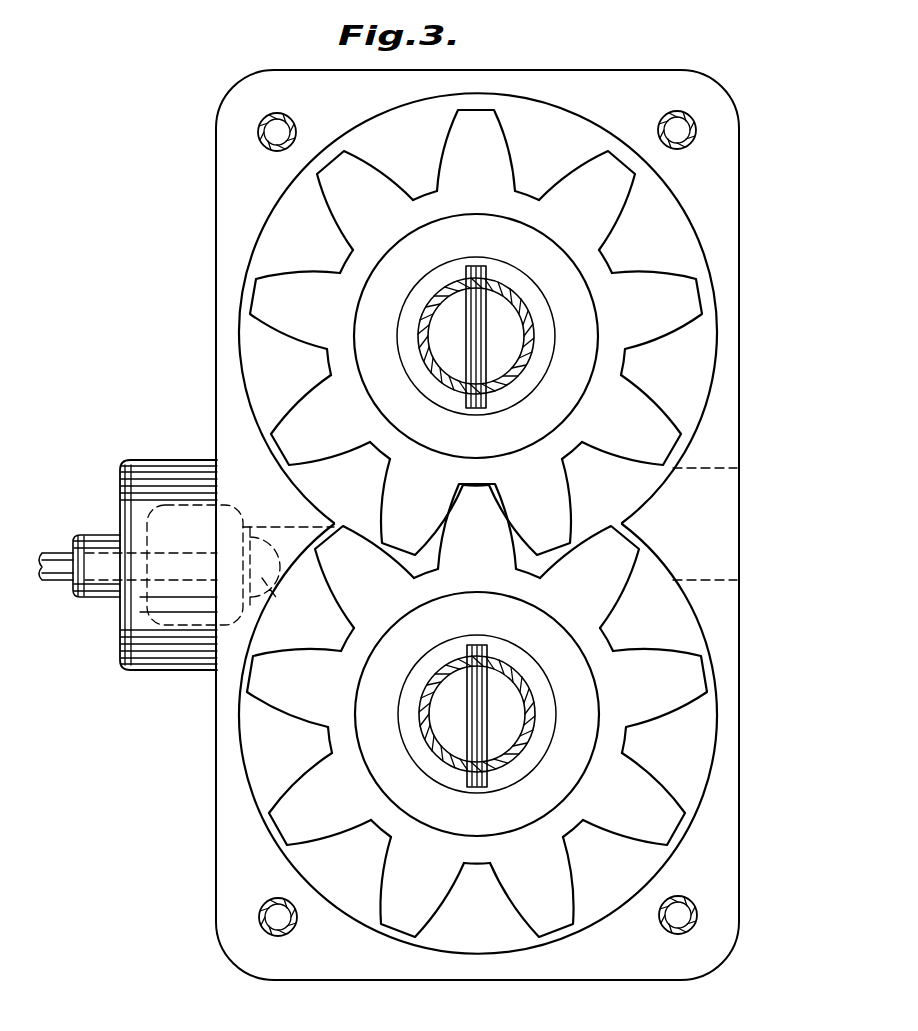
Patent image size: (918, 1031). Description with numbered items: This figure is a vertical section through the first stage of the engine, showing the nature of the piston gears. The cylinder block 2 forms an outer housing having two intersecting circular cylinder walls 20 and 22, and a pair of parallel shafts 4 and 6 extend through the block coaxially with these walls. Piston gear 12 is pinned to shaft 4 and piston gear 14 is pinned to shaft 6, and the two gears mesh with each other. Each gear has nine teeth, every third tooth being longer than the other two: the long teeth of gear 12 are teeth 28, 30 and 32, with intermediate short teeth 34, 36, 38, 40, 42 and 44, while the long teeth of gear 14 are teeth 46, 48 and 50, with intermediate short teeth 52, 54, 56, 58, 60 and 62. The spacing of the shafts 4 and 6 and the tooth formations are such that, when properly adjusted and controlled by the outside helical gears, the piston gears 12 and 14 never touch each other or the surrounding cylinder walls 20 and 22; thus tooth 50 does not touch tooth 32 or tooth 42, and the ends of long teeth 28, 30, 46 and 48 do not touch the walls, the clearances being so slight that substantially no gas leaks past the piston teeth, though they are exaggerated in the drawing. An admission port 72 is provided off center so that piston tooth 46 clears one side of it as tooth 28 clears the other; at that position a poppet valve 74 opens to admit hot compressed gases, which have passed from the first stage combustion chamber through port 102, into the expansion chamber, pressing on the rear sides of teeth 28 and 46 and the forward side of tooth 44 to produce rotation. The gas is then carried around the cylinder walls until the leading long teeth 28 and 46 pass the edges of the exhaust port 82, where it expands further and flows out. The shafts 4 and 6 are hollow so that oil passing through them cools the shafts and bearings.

The cylinder block 2 is at (462, 77).
The shaft 4 is at (510, 352).
The shaft 6 is at (510, 740).
The piston gear 12 is at (622, 360).
The piston gear 14 is at (478, 856).
The circular cylinder wall 20 is at (278, 229).
The circular cylinder wall 22 is at (253, 781).
The long tooth 28 is at (302, 282).
The long tooth 30 is at (613, 200).
The long tooth 32 is at (562, 498).
The short tooth 34 is at (380, 183).
The short tooth 36 is at (497, 143).
The short tooth 38 is at (660, 328).
The short tooth 40 is at (627, 447).
The short tooth 42 is at (393, 492).
The short tooth 44 is at (308, 412).
The long tooth 46 is at (325, 823).
The long tooth 48 is at (635, 825).
The long tooth 50 is at (495, 537).
The short tooth 52 is at (425, 905).
The short tooth 54 is at (560, 888).
The short tooth 56 is at (660, 703).
The short tooth 58 is at (612, 585).
The short tooth 60 is at (345, 593).
The short tooth 62 is at (305, 703).
The admission port 72 is at (285, 535).
The poppet valve 74 is at (263, 588).
The exhaust port 82 is at (708, 563).
The port 102 is at (173, 507).